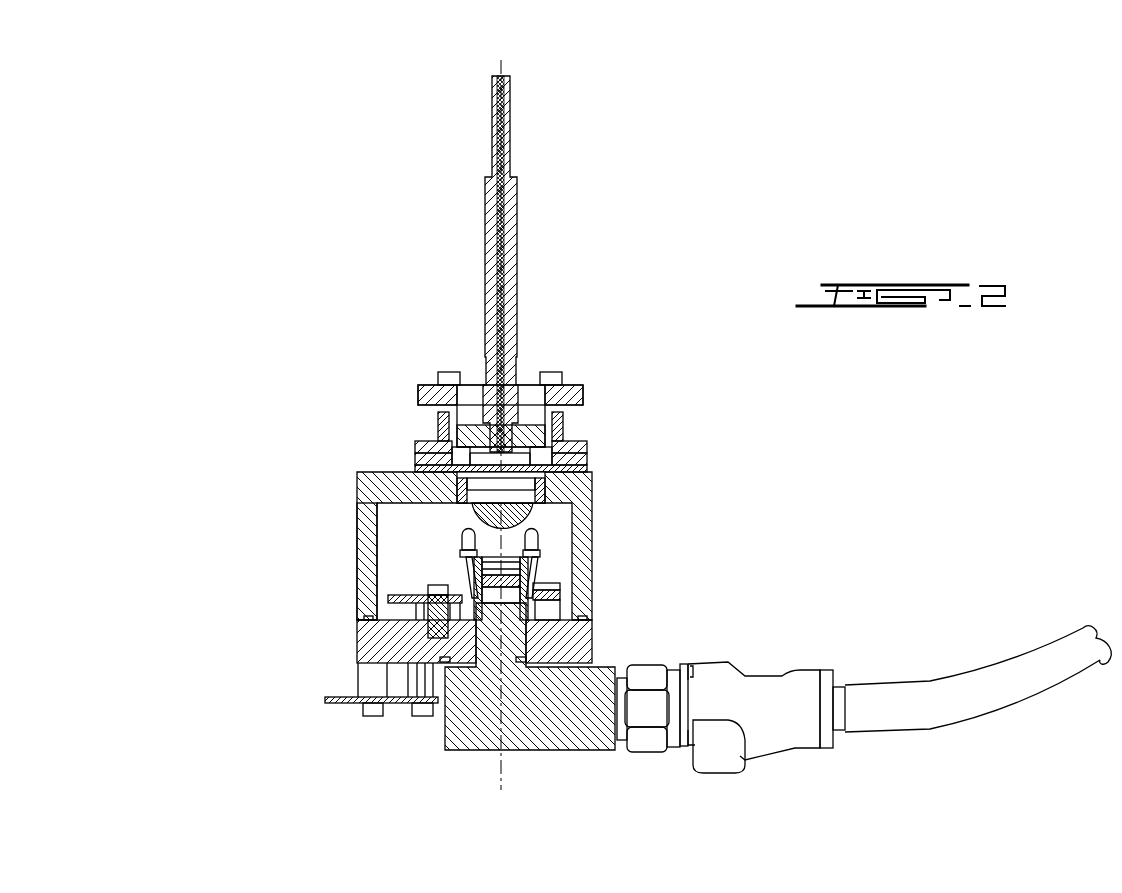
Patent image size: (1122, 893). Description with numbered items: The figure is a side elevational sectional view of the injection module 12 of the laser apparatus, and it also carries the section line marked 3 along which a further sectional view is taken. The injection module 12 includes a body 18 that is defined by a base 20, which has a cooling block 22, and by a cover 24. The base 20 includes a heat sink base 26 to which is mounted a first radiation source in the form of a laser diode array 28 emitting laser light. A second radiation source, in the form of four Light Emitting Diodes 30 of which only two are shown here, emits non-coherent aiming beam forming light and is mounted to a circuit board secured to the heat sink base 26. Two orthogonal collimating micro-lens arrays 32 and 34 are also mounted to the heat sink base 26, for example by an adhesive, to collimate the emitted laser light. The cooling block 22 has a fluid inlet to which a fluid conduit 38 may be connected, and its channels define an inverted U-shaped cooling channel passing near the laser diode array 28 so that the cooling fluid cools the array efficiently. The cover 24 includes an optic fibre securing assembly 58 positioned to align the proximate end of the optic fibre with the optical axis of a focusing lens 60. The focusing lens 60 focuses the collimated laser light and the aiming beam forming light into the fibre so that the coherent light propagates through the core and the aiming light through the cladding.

The section line 3- 3 is at (470, 65).
The injection module 12 is at (617, 290).
The body 18 is at (353, 560).
The base 20 is at (380, 645).
The cooling block 22 is at (451, 737).
The cover 24 is at (357, 523).
The heat sink base 26 is at (465, 570).
The laser diode array 28 is at (560, 580).
The Light Emitting Diodes 30 is at (540, 543).
The collimating micro-lens array 32 is at (468, 590).
The collimating micro-lens array 34 is at (505, 560).
The fluid conduit 38 is at (967, 695).
The optic fibre securing assembly 58 is at (434, 422).
The focusing lens 60 is at (416, 455).